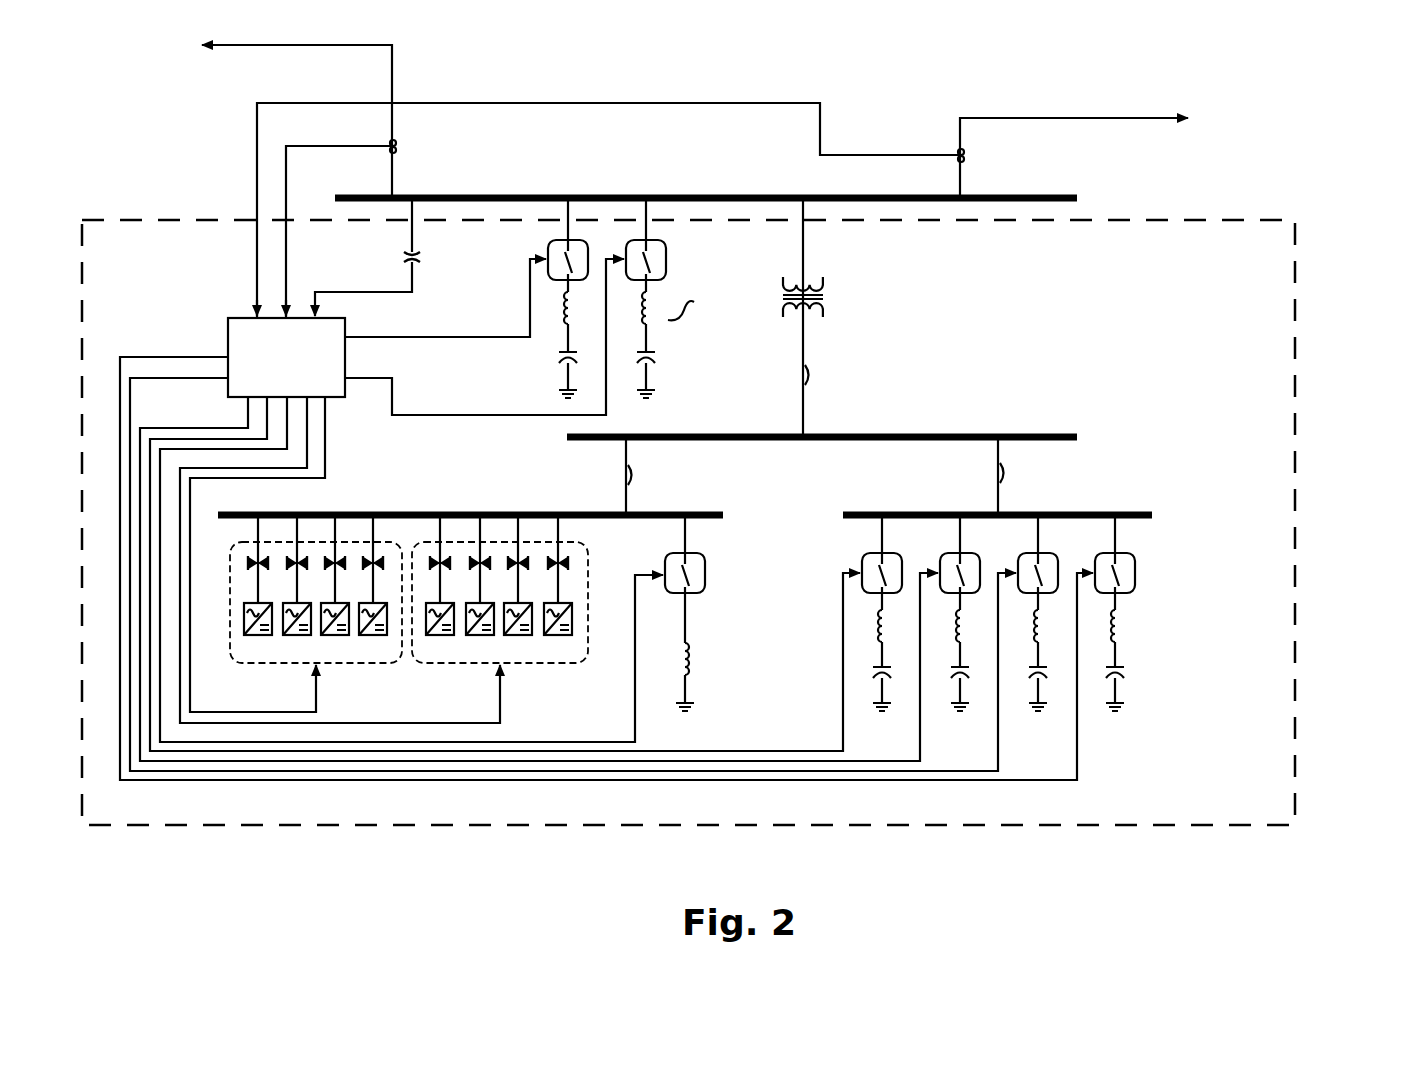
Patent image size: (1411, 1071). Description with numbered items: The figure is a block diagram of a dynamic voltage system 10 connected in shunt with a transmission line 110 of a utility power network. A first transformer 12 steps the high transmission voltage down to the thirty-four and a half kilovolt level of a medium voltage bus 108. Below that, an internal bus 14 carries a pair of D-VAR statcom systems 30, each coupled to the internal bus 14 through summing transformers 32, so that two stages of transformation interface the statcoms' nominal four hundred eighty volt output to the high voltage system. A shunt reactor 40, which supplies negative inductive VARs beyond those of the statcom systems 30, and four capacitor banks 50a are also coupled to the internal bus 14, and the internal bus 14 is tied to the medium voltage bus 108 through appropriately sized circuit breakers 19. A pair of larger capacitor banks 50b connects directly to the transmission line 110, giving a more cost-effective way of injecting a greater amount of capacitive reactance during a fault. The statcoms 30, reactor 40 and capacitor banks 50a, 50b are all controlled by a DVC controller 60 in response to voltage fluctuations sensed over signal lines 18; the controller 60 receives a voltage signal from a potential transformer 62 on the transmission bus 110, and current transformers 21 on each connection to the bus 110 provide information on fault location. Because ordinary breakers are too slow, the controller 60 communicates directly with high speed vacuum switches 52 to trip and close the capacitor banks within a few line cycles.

The dynamic voltage system 10 is at (327, 147).
The first transformer 12 is at (825, 266).
The internal bus 14 is at (717, 509).
The signal lines 18 is at (560, 108).
The circuit breakers 19 is at (618, 484).
The current transformers 21 is at (399, 150).
The D-VAR statcom system 30 is at (416, 615).
The summing transformer 32 is at (285, 576).
The shunt reactor 40 is at (708, 620).
The capacitor banks 50a is at (1030, 613).
The capacitor banks 50b is at (550, 304).
The high speed vacuum switches 52 is at (897, 562).
The DVC controller 60 is at (227, 340).
The potential transformer 62 is at (397, 266).
The medium voltage bus 108 is at (1064, 433).
The transmission line 110 is at (1078, 193).